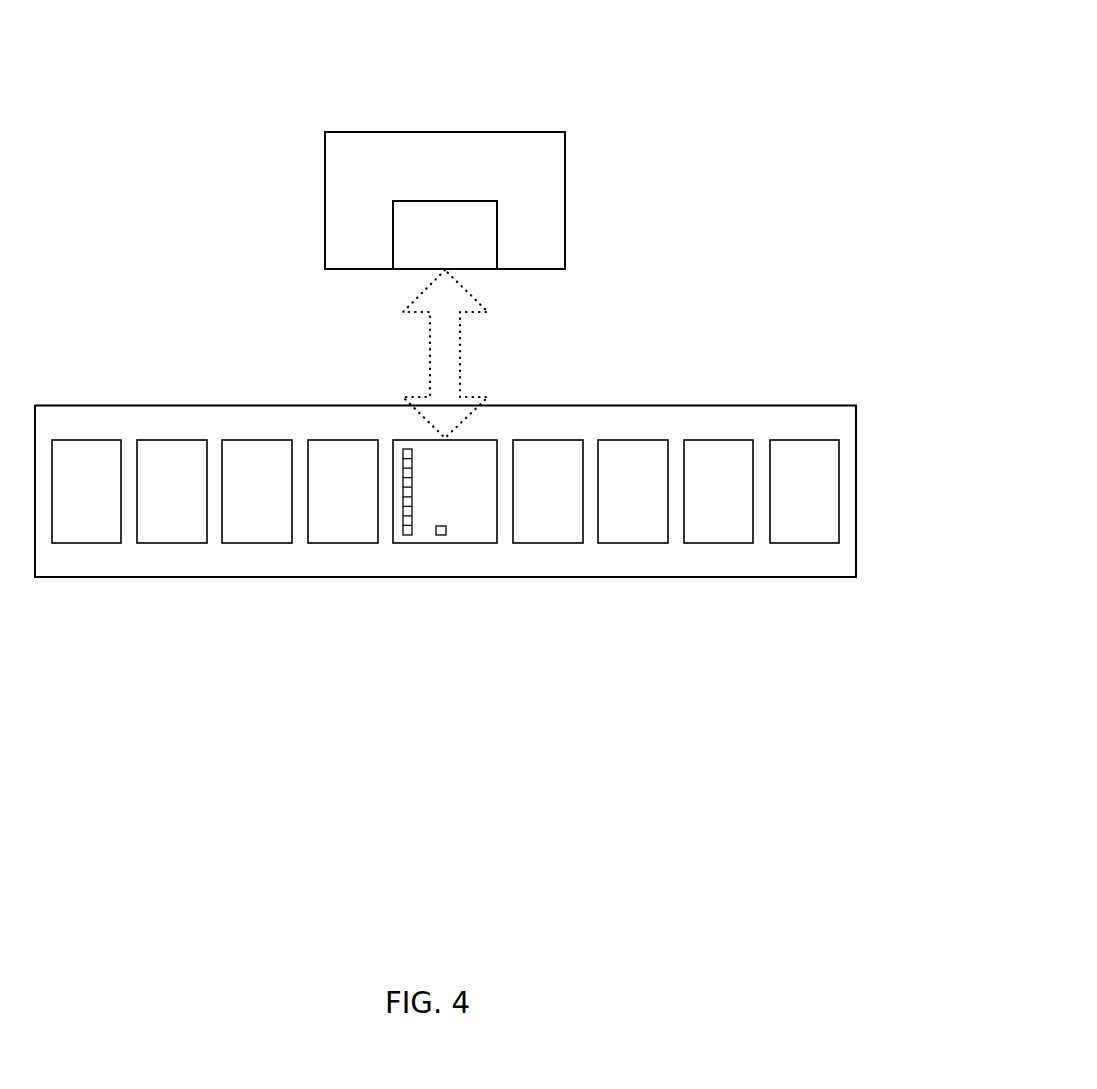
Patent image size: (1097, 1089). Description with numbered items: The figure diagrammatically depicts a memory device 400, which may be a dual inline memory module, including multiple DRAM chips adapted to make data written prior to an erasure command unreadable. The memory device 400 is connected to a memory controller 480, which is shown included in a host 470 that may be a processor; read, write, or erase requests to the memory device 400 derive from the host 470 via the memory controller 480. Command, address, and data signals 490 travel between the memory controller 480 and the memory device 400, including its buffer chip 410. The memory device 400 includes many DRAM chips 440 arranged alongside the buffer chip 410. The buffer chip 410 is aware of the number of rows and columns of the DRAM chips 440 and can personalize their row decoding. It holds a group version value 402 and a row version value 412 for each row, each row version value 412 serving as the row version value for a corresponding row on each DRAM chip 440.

The memory device 400 is at (695, 405).
The group version value 402 is at (441, 535).
The buffer chip 410 is at (480, 525).
The row version value 412 is at (405, 449).
The DRAM chip 440 is at (723, 525).
The host 470 is at (530, 132).
The memory controller 480 is at (412, 253).
The command, address, and data signals 490 is at (438, 337).